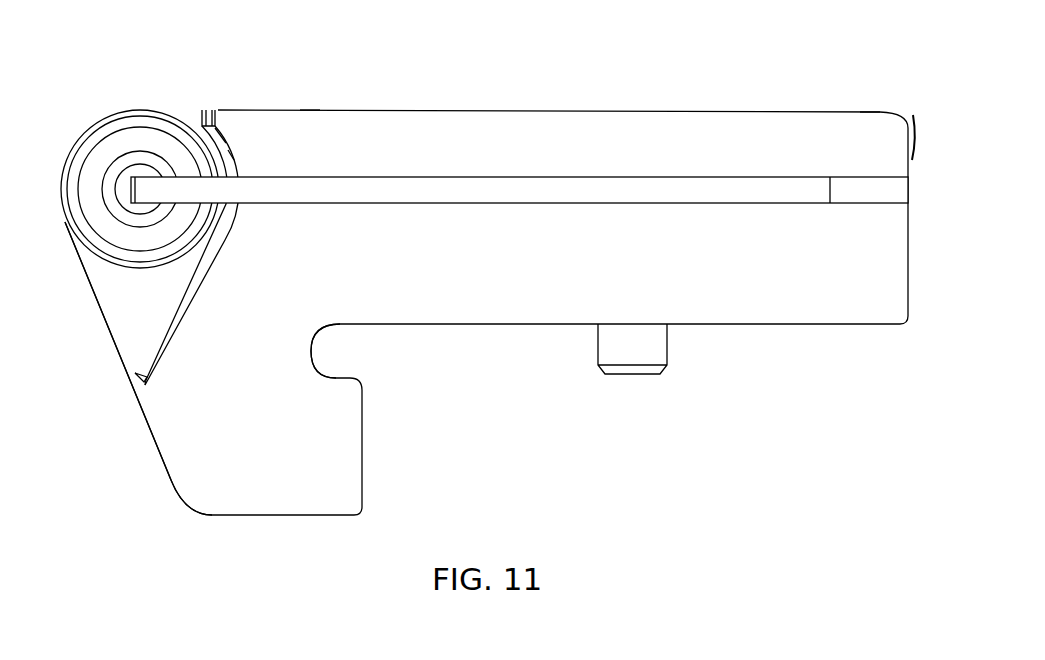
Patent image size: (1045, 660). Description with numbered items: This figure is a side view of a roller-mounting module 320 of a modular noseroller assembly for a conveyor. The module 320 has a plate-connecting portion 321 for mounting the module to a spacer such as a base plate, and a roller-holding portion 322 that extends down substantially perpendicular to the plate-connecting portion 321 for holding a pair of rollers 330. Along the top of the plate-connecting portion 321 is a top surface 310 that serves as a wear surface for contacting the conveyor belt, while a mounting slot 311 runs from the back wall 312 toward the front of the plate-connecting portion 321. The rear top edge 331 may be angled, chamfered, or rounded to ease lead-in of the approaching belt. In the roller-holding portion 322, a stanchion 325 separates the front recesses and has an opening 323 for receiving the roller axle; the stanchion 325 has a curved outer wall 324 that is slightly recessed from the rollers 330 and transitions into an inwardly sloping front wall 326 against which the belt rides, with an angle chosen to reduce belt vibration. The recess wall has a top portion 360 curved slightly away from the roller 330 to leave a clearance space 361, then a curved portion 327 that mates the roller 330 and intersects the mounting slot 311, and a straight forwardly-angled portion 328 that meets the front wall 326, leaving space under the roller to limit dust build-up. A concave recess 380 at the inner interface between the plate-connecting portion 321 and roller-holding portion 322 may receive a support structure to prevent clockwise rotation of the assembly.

The top surface 310 is at (285, 106).
The mounting slot 311 is at (742, 190).
The back wall 312 is at (892, 119).
The roller-mounting module 320 is at (391, 76).
The plate-connecting portion 321 is at (545, 152).
The roller-holding portion 322 is at (207, 437).
The opening 323 is at (668, 355).
The curved outer wall 324 is at (64, 160).
The stanchion 325 is at (112, 283).
The sloping front wall 326 is at (127, 365).
The curved portion 327 is at (230, 158).
The straight forwardly-angled portion 328 is at (166, 308).
The roller 330 is at (100, 155).
The rear top edge 331 is at (884, 112).
The top portion 360 is at (210, 108).
The clearance space 361 is at (190, 110).
The recess 380 is at (342, 354).